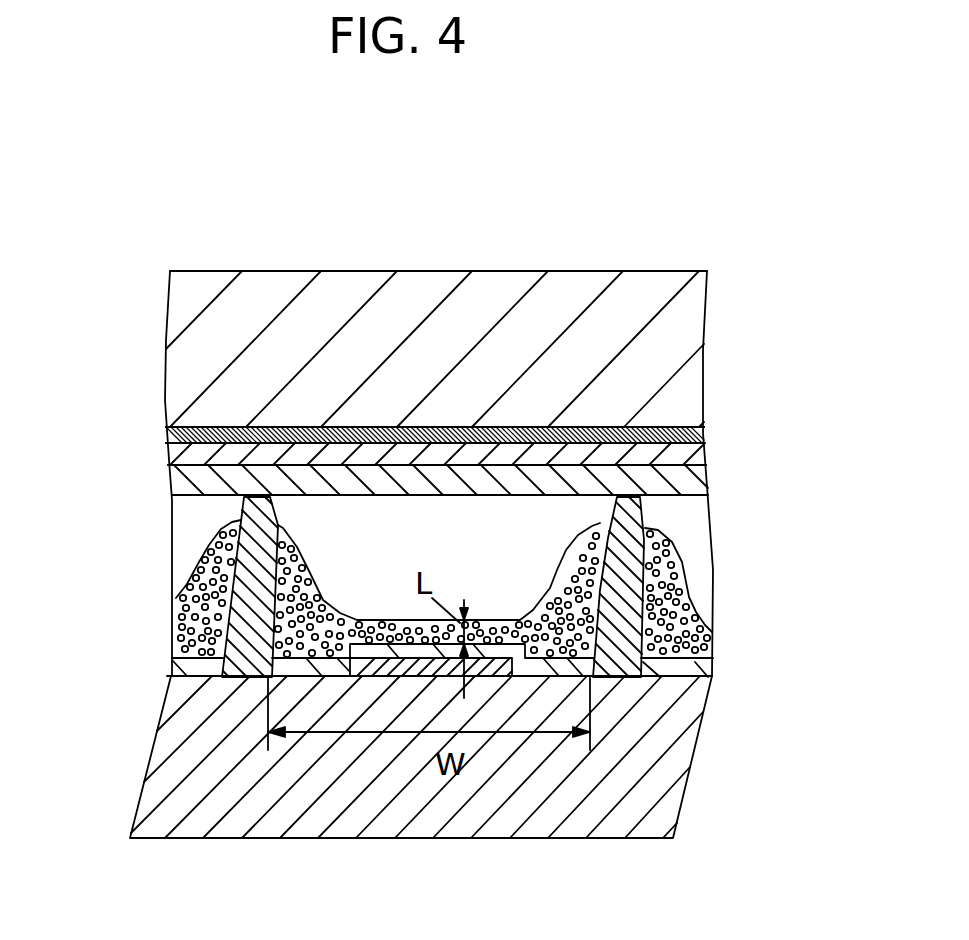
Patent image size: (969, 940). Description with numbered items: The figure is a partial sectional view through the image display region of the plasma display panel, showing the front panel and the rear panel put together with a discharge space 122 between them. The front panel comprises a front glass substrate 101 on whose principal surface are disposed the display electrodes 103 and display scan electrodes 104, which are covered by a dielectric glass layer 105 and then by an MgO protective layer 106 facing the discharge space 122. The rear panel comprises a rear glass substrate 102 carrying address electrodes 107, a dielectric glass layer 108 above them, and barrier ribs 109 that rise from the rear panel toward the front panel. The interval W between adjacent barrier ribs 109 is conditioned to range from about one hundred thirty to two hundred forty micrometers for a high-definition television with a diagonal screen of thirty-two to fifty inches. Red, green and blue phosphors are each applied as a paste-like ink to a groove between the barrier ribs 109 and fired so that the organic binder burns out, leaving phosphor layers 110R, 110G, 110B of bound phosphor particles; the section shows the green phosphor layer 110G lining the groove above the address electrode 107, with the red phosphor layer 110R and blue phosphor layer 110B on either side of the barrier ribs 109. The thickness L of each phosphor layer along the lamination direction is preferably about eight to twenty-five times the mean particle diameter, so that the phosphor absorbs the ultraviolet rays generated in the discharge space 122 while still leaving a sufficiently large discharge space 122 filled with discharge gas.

The front glass substrate 101 is at (690, 357).
The rear glass substrate 102 is at (678, 753).
The display electrodes 103 is at (705, 437).
The display scan electrodes 104 is at (705, 437).
The dielectric glass layer 105 is at (706, 459).
The MgO protective layer 106 is at (710, 487).
The address electrodes 107 is at (342, 675).
The dielectric glass layer 108 is at (323, 603).
The barrier ribs 109 is at (610, 512).
The red phosphor layer 110R is at (176, 597).
The green phosphor layer 110G is at (540, 623).
The blue phosphor layer 110B is at (694, 628).
The discharge space 122 is at (543, 552).